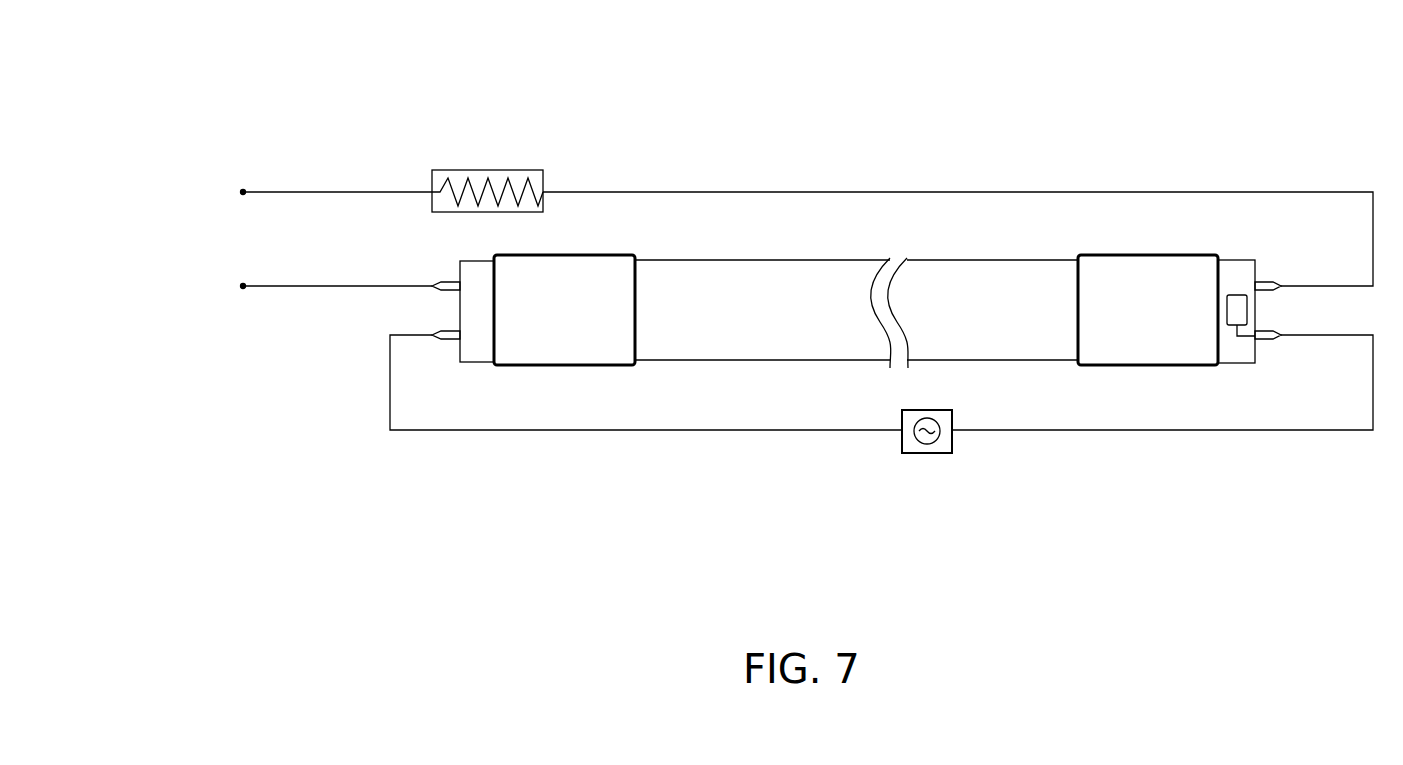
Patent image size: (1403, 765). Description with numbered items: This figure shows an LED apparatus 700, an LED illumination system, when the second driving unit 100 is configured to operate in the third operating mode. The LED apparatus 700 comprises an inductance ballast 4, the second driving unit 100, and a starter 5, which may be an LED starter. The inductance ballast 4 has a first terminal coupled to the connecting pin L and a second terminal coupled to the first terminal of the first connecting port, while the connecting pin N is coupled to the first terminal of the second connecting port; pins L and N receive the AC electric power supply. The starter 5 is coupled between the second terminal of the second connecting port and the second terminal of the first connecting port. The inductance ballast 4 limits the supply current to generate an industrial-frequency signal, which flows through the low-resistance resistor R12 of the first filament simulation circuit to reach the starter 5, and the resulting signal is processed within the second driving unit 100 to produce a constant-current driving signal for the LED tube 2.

The LED apparatus 700 is at (133, 103).
The inductance ballast 4 is at (482, 175).
The LED tube 2 is at (758, 287).
The second driving unit 100 is at (1180, 355).
The starter 5 is at (940, 410).
The resistor R12 is at (1237, 305).